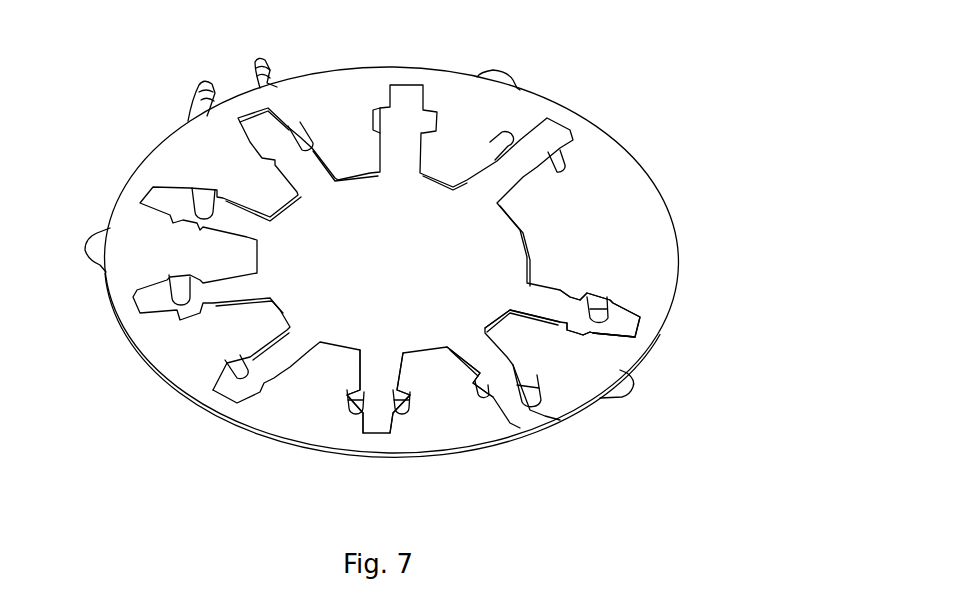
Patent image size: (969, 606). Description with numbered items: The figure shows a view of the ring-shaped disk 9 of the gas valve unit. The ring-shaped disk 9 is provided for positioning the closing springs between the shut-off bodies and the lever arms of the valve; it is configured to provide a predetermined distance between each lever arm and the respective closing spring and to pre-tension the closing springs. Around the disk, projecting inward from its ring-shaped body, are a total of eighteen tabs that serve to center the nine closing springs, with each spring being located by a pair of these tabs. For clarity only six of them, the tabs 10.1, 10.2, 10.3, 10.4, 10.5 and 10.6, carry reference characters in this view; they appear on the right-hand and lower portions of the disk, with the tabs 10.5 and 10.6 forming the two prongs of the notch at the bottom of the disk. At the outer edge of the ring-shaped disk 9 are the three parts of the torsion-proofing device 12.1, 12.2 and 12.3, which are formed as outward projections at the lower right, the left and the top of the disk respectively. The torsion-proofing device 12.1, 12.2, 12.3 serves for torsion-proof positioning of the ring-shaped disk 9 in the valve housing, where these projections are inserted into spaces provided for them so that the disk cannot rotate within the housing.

The ring-shaped disk 9 is at (427, 235).
The tab 10.1 is at (595, 298).
The tab 10.2 is at (590, 338).
The tab 10.3 is at (555, 412).
The tab 10.4 is at (490, 397).
The tab 10.5 is at (397, 413).
The tab 10.6 is at (348, 413).
The torsion-proofing device 12.1 is at (630, 397).
The torsion-proofing device 12.2 is at (88, 245).
The torsion-proofing device 12.3 is at (493, 70).